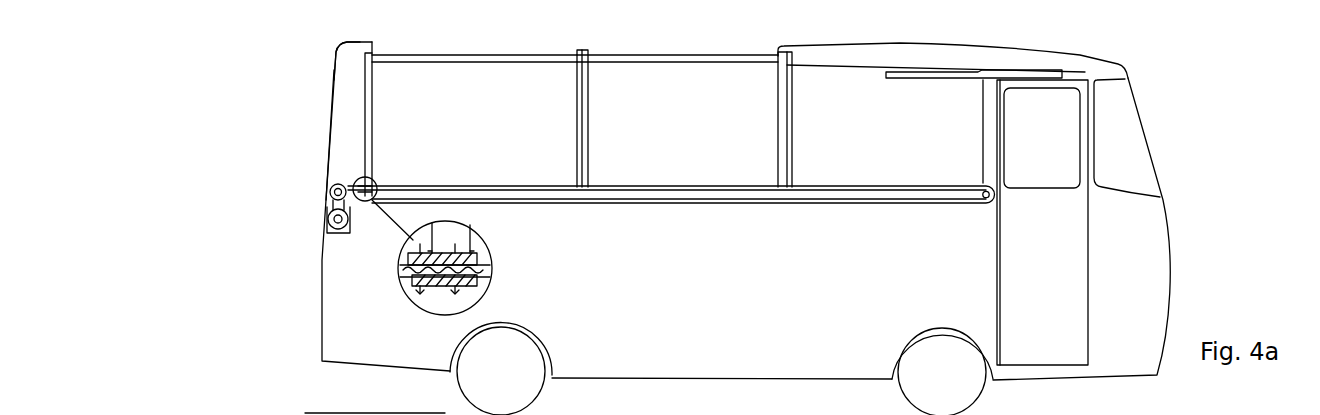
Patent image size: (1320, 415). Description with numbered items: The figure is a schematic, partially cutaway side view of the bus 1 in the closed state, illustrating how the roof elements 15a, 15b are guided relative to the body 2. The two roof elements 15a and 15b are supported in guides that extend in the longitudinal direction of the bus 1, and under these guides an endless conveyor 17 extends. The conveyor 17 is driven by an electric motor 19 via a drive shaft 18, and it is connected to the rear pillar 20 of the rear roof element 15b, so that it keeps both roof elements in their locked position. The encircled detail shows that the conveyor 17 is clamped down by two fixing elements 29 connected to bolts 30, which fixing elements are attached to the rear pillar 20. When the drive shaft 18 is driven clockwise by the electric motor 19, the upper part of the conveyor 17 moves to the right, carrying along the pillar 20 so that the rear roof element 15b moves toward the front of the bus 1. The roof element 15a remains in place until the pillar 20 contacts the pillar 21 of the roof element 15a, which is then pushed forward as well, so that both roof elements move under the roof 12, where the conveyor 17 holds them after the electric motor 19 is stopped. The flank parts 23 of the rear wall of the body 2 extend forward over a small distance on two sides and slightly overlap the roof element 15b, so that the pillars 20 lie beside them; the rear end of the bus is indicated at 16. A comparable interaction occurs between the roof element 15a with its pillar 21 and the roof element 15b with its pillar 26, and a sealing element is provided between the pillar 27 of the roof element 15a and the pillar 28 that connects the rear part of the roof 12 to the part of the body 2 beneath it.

The bus 1 is at (268, 160).
The body 2 is at (319, 313).
The roof 12 is at (855, 44).
The roof element 15a is at (662, 53).
The rear roof element 15b is at (495, 20).
The rear end 16 is at (353, 20).
The endless conveyor 17 is at (683, 202).
The drive shaft 18 is at (339, 184).
The electric motor 19 is at (333, 218).
The pillar 20 is at (393, 122).
The pillar 21 is at (577, 125).
The flank part 23 is at (342, 97).
The pillar 26 is at (610, 118).
The pillar 27 is at (815, 118).
The pillar 28 is at (775, 118).
The fixing element 29 is at (477, 263).
The bolt 30 is at (423, 293).